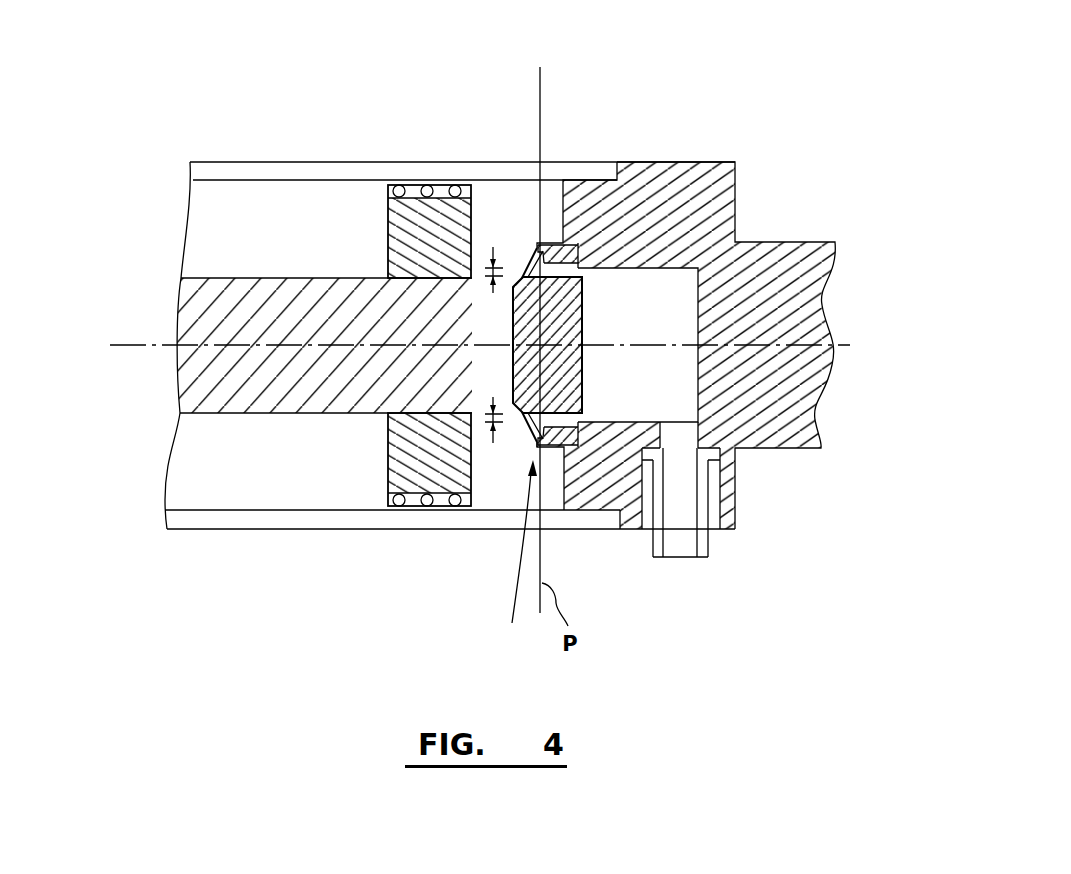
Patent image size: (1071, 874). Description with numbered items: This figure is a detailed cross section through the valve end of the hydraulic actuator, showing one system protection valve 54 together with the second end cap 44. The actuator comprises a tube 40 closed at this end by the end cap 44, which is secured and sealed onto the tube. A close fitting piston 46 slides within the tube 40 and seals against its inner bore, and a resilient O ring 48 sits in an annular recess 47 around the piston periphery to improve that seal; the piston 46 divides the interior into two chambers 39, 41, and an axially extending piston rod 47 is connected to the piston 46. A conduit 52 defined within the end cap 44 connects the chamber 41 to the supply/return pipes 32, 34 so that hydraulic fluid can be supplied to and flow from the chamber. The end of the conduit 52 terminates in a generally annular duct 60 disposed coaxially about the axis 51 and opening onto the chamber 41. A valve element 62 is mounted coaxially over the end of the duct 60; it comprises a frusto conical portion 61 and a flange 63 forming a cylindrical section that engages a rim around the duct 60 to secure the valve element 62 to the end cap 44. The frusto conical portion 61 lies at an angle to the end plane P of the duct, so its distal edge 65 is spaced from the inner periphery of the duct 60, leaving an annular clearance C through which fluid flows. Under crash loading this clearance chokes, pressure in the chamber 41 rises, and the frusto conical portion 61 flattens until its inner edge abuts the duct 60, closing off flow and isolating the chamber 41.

The tube 40 is at (232, 172).
The chamber 39 is at (290, 232).
The piston 46 is at (403, 227).
The O ring 48 is at (428, 187).
The piston rod 47 is at (505, 208).
The chamber 41 is at (507, 210).
The annular duct 60 is at (578, 252).
The second end cap 44 is at (670, 200).
The valve element 62 is at (524, 255).
The axis 51 is at (140, 346).
The conduit 52 is at (673, 380).
The supply/return pipe 32 is at (685, 536).
The supply/return pipe 34 is at (679, 489).
The distal edge 65 is at (517, 402).
The frusto conical portion 61 is at (528, 422).
The system protection valve 54 is at (515, 558).
The flange 63 is at (545, 450).